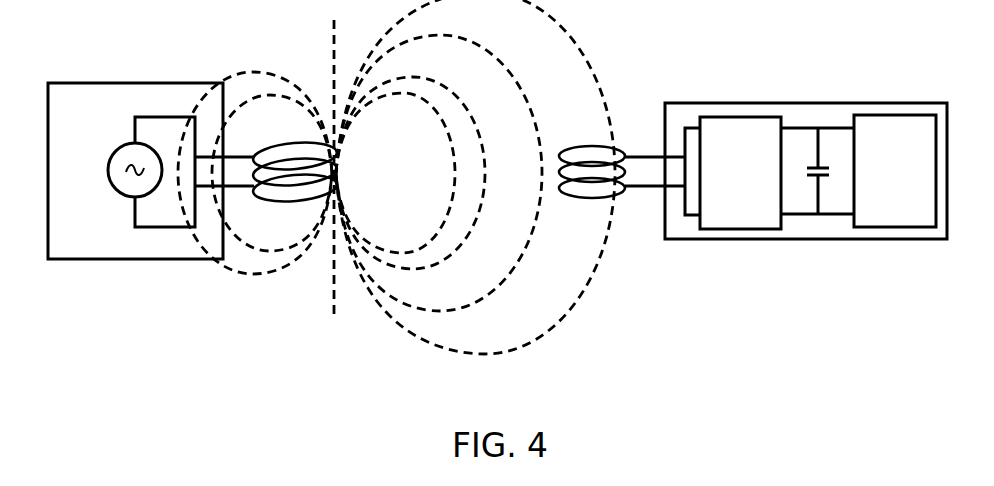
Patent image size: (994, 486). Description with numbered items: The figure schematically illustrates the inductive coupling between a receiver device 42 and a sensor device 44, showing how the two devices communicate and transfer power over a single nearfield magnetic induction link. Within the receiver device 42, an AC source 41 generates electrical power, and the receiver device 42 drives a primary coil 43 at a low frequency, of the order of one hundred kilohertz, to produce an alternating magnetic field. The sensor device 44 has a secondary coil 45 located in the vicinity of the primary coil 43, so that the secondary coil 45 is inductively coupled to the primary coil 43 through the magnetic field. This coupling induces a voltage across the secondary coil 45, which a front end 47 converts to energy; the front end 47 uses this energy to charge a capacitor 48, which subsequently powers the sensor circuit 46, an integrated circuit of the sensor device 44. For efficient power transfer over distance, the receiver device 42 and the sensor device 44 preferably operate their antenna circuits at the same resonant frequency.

The AC source 41 is at (125, 145).
The receiver device 42 is at (162, 259).
The primary coil 43 is at (277, 143).
The sensor device 44 is at (810, 239).
The secondary coil 45 is at (587, 142).
The sensor circuit 46 is at (900, 115).
The front end 47 is at (733, 117).
The capacitor 48 is at (822, 165).